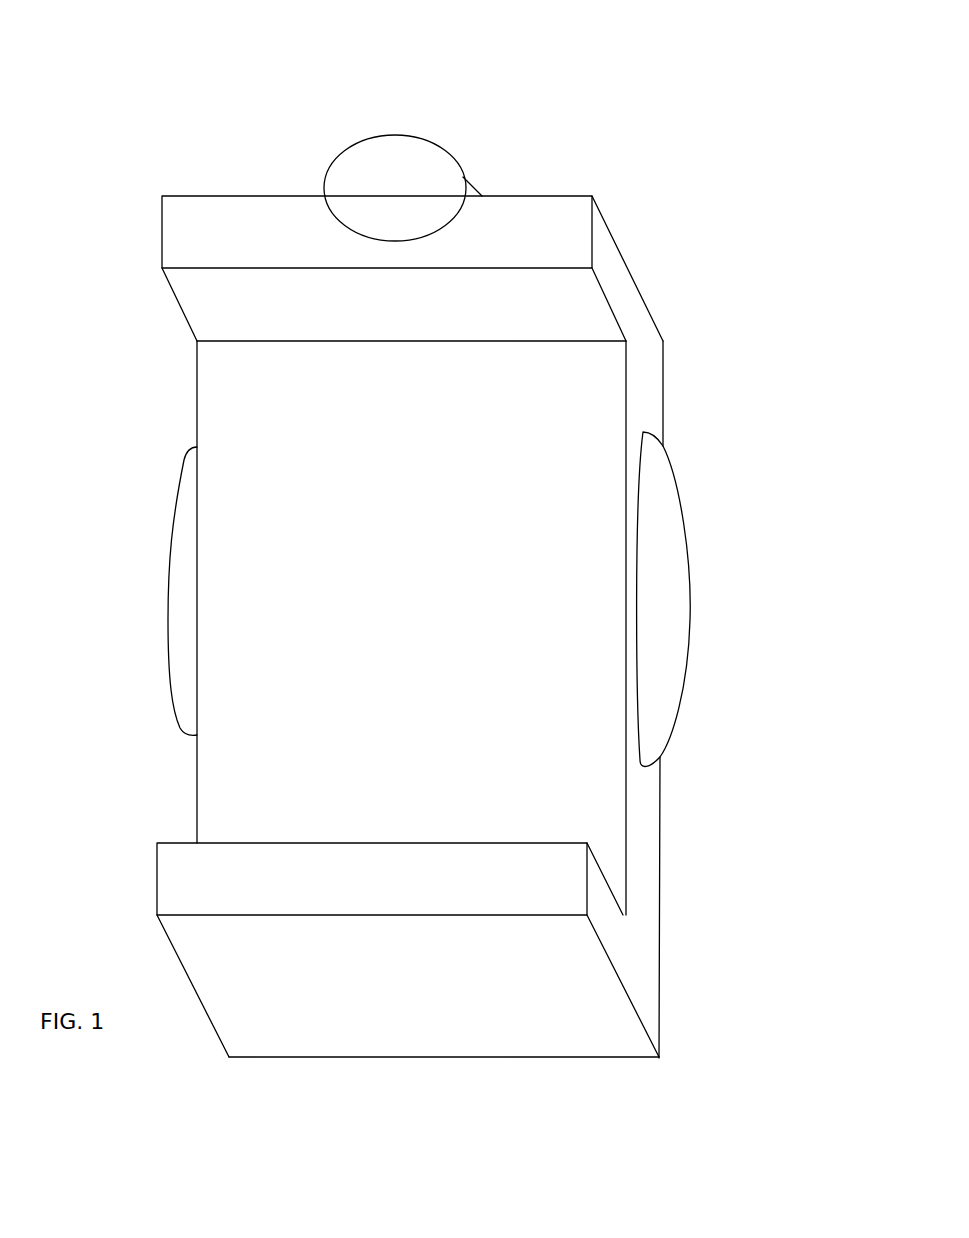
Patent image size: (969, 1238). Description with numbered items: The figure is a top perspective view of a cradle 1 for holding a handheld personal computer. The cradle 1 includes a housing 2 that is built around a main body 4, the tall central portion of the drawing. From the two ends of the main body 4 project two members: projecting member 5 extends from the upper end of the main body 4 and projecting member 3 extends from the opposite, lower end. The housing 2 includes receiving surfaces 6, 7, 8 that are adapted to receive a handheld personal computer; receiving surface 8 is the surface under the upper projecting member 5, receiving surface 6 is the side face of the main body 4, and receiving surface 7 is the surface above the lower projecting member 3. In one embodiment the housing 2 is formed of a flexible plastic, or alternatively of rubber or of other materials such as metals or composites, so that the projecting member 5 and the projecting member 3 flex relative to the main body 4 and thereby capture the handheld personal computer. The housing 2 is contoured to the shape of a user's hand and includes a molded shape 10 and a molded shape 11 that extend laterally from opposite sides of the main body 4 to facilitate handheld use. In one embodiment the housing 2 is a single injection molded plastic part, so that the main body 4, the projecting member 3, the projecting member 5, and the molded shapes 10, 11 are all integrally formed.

The cradle 1 is at (172, 62).
The housing 2 is at (644, 395).
The projecting member 3 is at (568, 934).
The main body 4 is at (713, 880).
The projecting member 5 is at (610, 180).
The receiving surface 6 is at (205, 528).
The receiving surface 7 is at (205, 834).
The receiving surface 8 is at (230, 318).
The molded shape 10 is at (178, 590).
The molded shape 11 is at (664, 542).